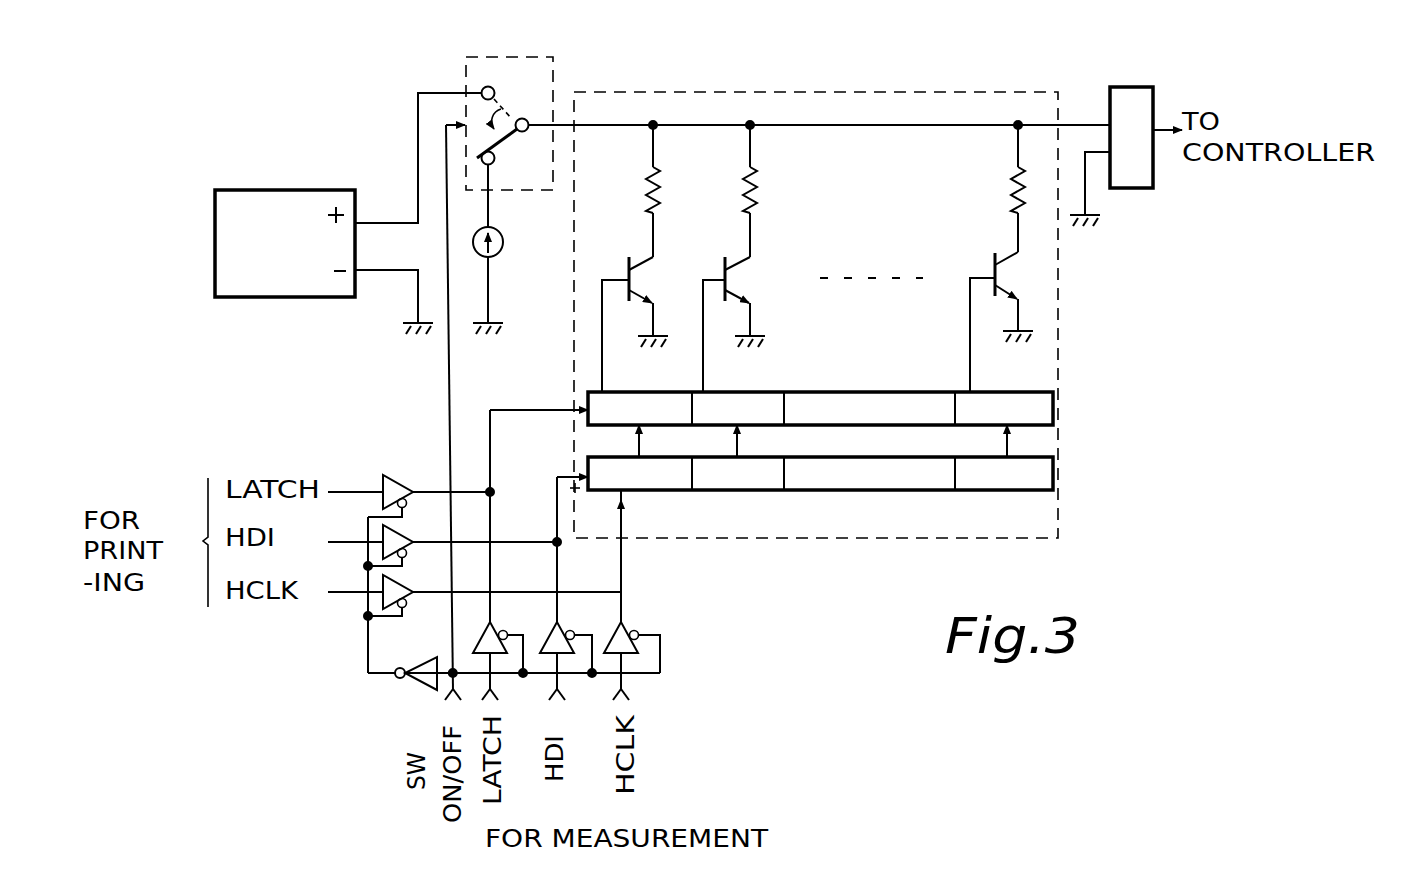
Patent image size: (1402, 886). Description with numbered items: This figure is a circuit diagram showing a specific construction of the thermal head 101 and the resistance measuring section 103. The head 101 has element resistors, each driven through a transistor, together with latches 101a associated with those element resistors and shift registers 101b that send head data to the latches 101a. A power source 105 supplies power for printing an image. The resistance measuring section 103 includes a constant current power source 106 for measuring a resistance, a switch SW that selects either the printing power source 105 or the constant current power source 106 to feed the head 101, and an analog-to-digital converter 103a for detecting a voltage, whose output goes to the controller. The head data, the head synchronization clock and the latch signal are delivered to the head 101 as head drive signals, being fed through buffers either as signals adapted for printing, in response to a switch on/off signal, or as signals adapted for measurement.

The thermal head 101 is at (850, 89).
The latches 101a is at (1040, 405).
The shift registers 101b is at (1040, 473).
The resistance measuring section 103 is at (390, 115).
The analog-to-digital converter 103a is at (1128, 93).
The power source 105 is at (320, 200).
The constant current power source 106 is at (503, 246).
The switch SW is at (539, 97).